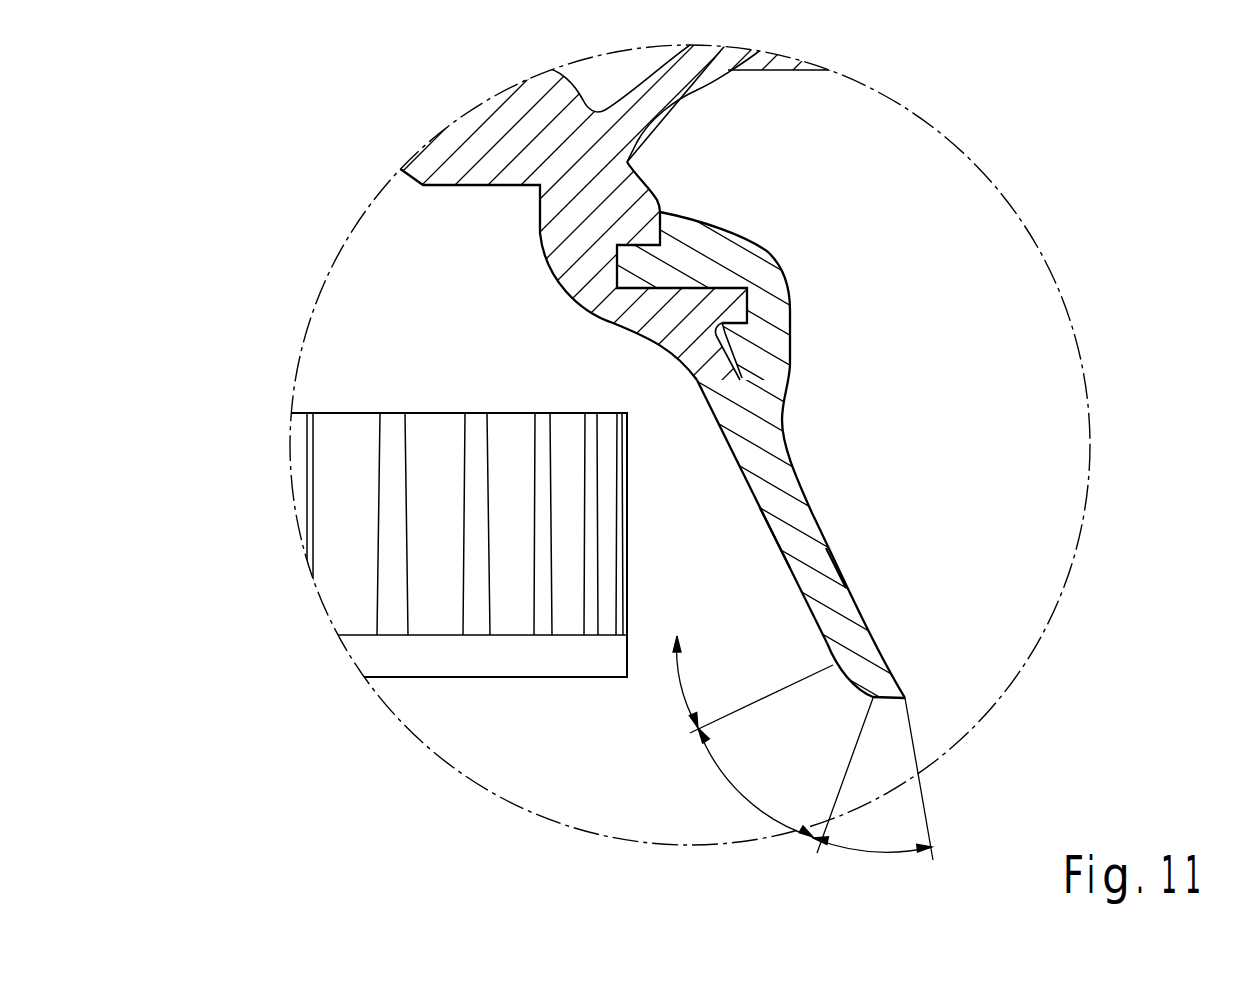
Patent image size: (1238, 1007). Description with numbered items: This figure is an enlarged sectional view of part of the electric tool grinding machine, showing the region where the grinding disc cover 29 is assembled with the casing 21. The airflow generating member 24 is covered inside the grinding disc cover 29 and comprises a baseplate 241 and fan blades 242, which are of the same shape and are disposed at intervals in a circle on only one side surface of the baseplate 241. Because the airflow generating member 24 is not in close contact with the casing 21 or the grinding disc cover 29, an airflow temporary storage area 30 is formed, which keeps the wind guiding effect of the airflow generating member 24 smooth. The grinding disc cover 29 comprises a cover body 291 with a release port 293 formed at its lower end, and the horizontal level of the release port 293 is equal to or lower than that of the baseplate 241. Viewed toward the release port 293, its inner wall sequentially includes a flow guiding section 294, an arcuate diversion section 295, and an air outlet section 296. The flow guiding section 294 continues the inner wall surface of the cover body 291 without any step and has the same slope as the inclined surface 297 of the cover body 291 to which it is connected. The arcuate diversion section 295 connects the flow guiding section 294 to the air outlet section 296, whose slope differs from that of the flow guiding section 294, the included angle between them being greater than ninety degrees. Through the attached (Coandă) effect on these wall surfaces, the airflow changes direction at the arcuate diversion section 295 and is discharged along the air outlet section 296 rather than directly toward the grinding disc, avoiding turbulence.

The casing 21 is at (733, 58).
The airflow generating member 24 is at (398, 571).
The baseplate 241 is at (380, 652).
The fan blades 242 is at (323, 463).
The grinding disc cover 29 is at (805, 398).
The cover body 291 is at (835, 590).
The release port 293 is at (872, 680).
The flow guiding section 294 is at (680, 677).
The arcuate diversion section 295 is at (742, 792).
The air outlet section 296 is at (873, 852).
The inclined surface 297 is at (778, 543).
The airflow temporary storage area 30 is at (368, 280).